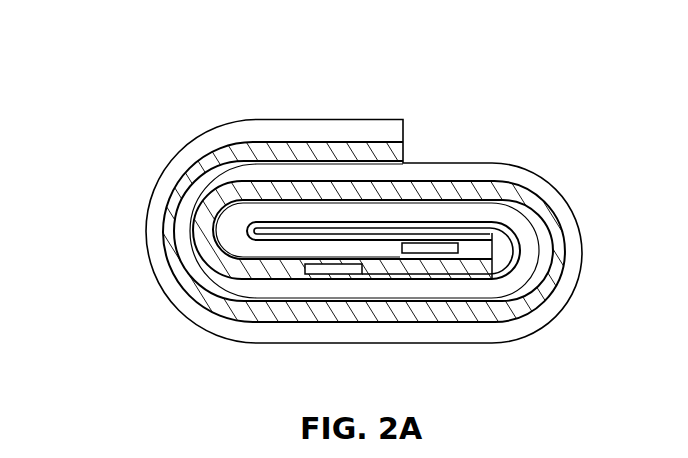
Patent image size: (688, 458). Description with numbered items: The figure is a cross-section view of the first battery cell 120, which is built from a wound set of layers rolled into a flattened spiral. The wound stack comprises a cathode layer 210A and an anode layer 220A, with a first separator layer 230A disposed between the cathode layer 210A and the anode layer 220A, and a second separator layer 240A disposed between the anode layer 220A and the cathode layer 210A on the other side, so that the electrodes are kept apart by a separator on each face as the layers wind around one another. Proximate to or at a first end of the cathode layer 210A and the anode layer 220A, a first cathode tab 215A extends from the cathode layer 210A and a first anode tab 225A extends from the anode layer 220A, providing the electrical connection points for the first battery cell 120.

The first battery cell 120 is at (76, 50).
The cathode layer 210A is at (335, 119).
The first separator layer 230A is at (404, 139).
The anode layer 220A is at (404, 152).
The second separator layer 240A is at (404, 159).
The first cathode tab 215A is at (440, 252).
The first anode tab 225A is at (333, 275).